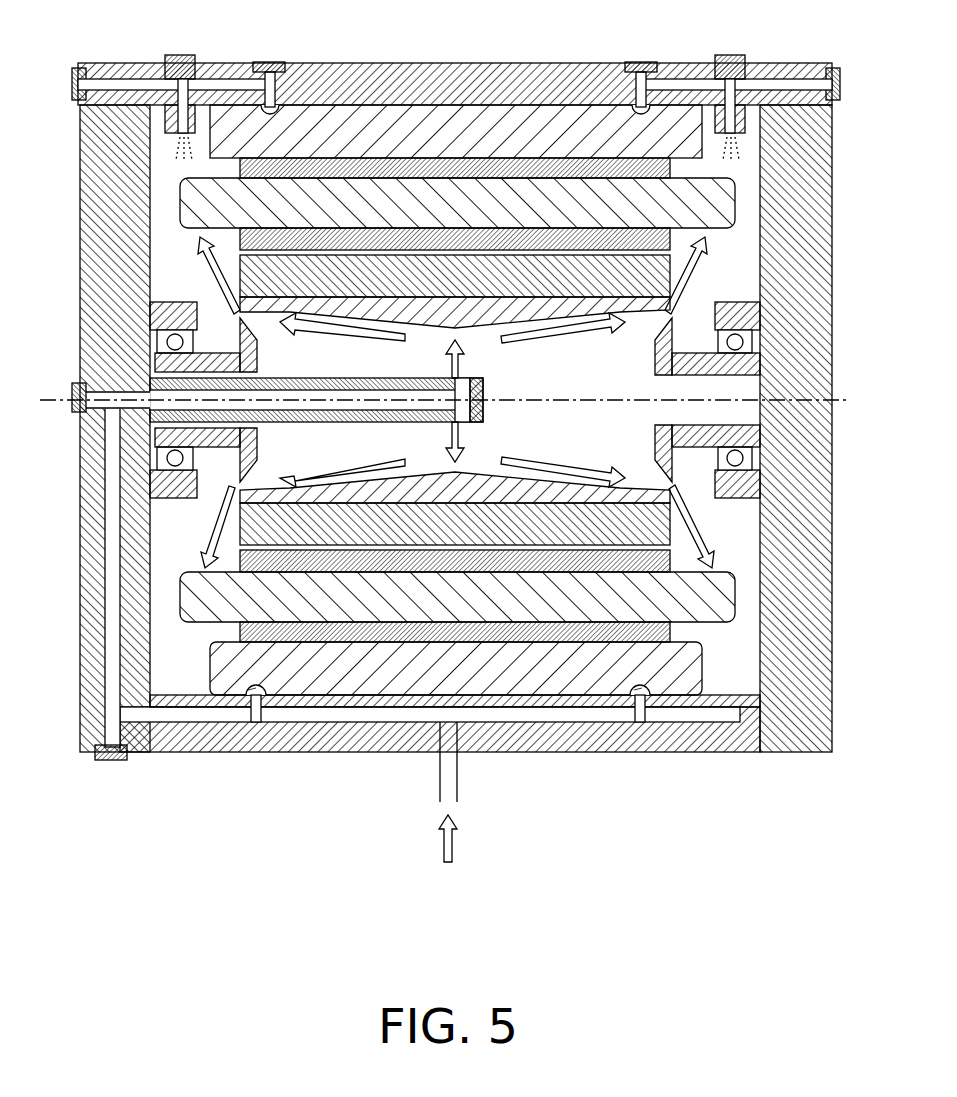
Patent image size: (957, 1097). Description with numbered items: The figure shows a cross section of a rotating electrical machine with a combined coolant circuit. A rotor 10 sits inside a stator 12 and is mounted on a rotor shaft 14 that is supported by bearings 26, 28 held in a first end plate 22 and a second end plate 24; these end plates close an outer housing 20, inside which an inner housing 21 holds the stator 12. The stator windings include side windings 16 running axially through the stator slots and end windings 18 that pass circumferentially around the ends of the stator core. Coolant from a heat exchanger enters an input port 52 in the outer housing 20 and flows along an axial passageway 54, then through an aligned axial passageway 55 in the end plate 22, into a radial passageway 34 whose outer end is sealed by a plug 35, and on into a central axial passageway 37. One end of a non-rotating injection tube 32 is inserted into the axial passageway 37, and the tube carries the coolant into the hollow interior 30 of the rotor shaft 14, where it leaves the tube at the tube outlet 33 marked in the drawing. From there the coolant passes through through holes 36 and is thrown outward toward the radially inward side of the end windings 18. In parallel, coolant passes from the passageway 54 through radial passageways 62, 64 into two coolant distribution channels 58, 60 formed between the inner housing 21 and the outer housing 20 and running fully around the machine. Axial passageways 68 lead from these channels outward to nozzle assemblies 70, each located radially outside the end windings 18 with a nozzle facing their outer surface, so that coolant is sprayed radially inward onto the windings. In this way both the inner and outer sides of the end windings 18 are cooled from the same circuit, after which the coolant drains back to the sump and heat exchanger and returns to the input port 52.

The rotor 10 is at (472, 284).
The stator 12 is at (530, 160).
The rotor shaft 14 is at (472, 326).
The side windings 16 is at (472, 219).
The end windings 18 is at (227, 219).
The outer housing 20 is at (385, 68).
The inner housing 21 is at (468, 115).
The first end plate 22 is at (80, 320).
The second end plate 24 is at (832, 330).
The bearing 26 is at (158, 455).
The bearing 28 is at (755, 455).
The hollow interior 30 is at (602, 384).
The injection tube 32 is at (367, 414).
The shaft outlet 33 is at (483, 420).
The passageway 34 is at (100, 577).
The plug 35 is at (106, 760).
The through holes 36 is at (670, 312).
The axial passageway 37 is at (75, 410).
The input port 52 is at (457, 780).
The passageway 54 is at (385, 715).
The axial passageway 55 is at (143, 743).
The coolant distribution channel 58 is at (290, 66).
The coolant distribution channel 60 is at (638, 76).
The radial passageway 62 is at (248, 697).
The radial passageway 64 is at (640, 708).
The axial passageway 68 is at (233, 76).
The nozzle assembly 70 is at (187, 56).